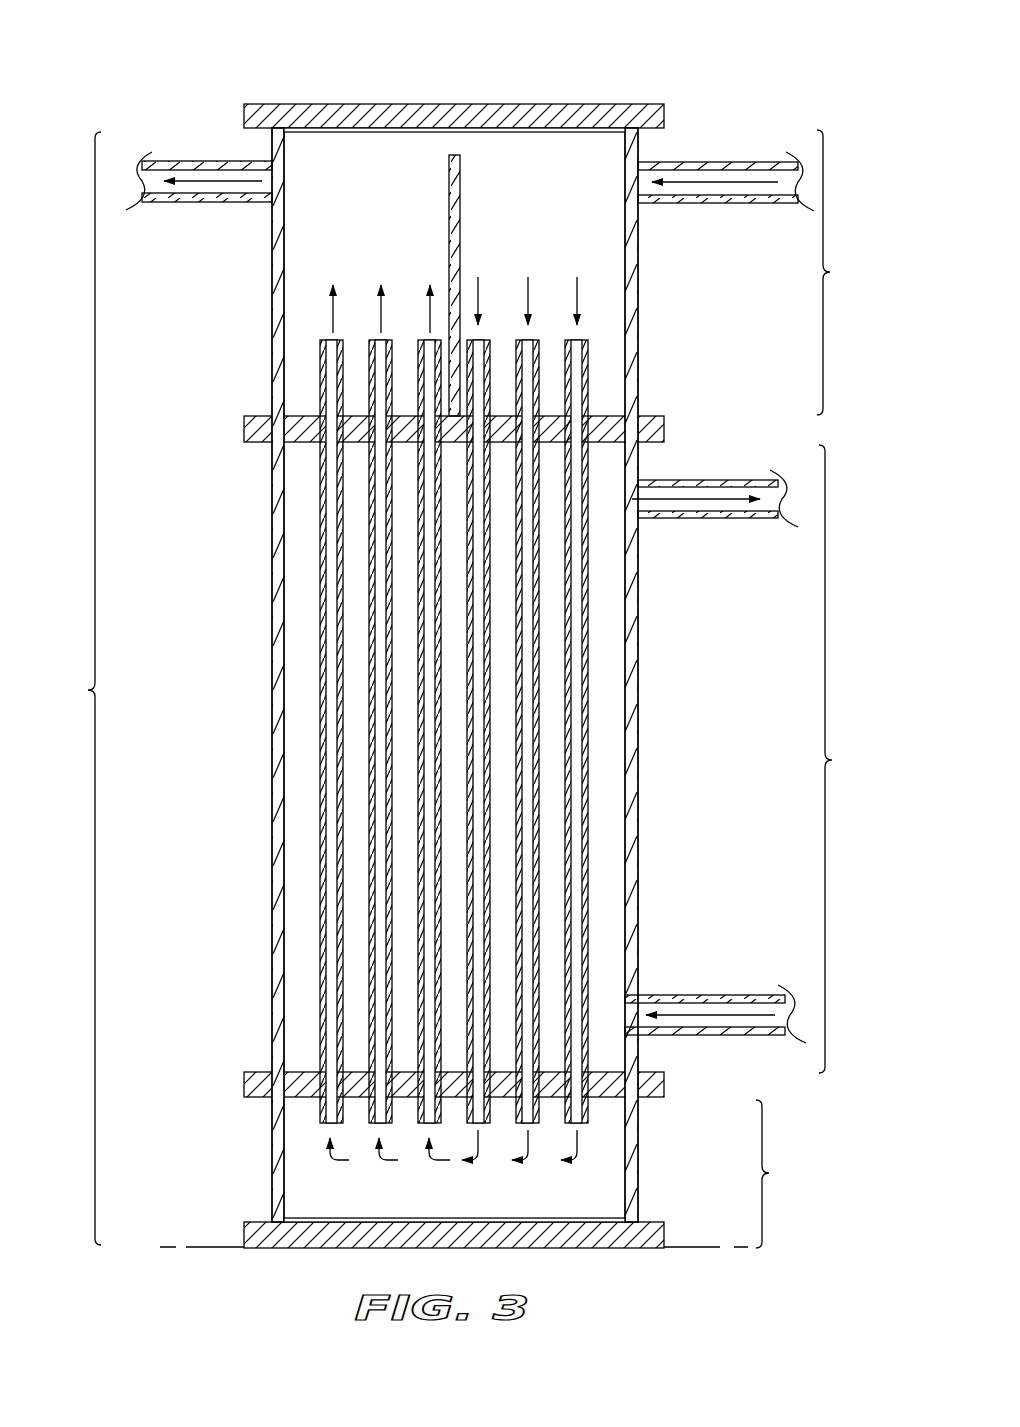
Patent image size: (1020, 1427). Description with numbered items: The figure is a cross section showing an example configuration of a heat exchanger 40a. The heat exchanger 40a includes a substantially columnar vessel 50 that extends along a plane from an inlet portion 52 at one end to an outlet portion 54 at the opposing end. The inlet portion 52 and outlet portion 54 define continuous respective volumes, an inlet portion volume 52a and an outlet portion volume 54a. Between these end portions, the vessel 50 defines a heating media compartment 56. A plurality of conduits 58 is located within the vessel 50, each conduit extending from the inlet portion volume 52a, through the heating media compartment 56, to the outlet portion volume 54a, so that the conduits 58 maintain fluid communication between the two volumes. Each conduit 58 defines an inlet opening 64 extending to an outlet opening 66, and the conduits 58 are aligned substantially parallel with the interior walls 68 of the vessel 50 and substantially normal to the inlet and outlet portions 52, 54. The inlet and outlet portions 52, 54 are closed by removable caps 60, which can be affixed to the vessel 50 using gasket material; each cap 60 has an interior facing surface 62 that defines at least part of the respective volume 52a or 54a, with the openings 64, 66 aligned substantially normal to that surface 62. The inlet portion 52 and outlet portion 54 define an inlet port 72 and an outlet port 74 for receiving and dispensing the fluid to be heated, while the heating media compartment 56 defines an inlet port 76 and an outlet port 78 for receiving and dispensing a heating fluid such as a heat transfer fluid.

The heat exchanger 40a is at (737, 91).
The vessel 50 is at (77, 688).
The inlet portion 52 is at (778, 1174).
The inlet portion volume 52a is at (500, 1197).
The outlet portion 54 is at (840, 272).
The outlet portion volume 54a is at (348, 176).
The heating media compartment 56 is at (841, 759).
The conduits 58 is at (417, 685).
The removable caps 60 is at (556, 104).
The interior facing surface 62 is at (372, 131).
The inlet opening 64 is at (432, 1161).
The outlet opening 66 is at (381, 312).
The interior walls 68 is at (637, 713).
The inlet port 72 is at (680, 205).
The outlet port 74 is at (215, 161).
The heating fluid inlet port 76 is at (683, 996).
The heating fluid outlet port 78 is at (665, 519).